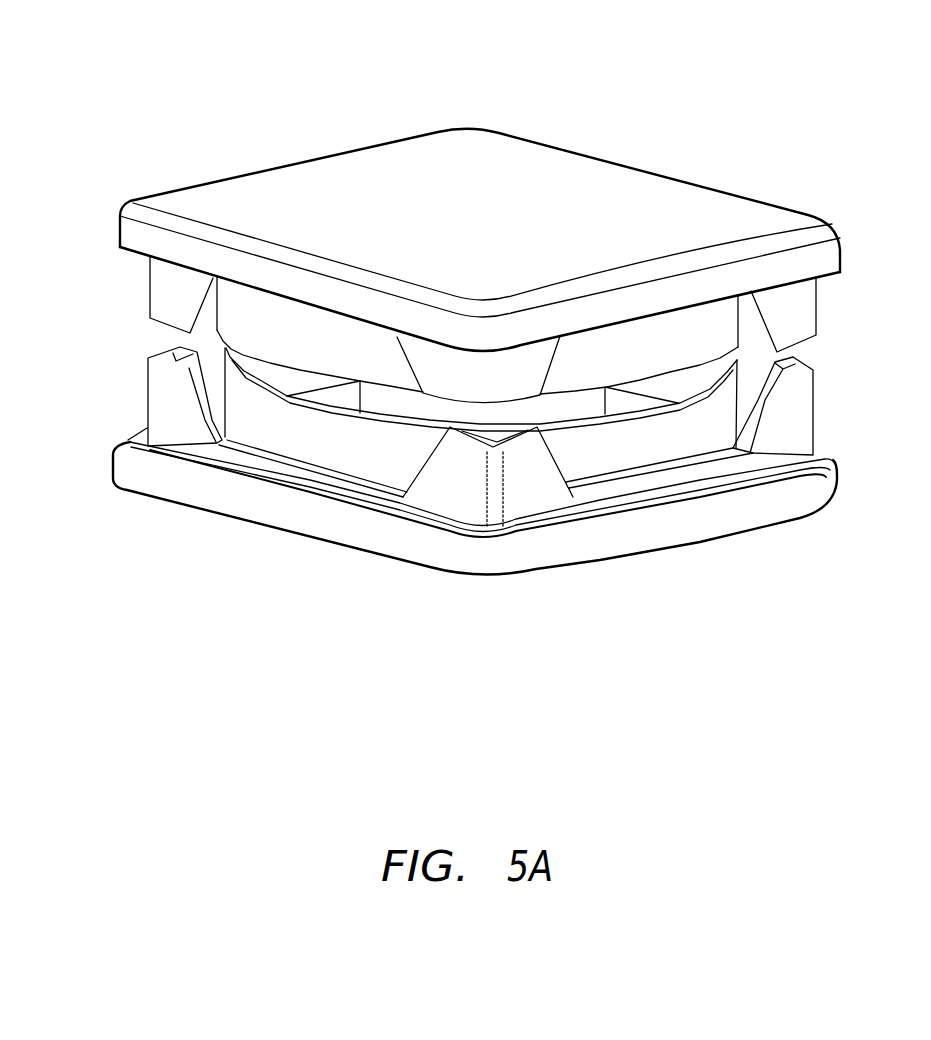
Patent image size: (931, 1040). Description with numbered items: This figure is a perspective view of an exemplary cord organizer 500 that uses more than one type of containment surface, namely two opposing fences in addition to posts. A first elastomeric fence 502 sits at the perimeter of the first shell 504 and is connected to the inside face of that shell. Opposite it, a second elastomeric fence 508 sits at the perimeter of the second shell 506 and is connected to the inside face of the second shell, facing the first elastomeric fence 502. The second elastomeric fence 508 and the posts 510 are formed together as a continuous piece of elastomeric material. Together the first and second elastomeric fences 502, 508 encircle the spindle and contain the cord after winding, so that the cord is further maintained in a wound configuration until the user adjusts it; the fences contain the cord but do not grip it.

The cord organizer 500 is at (757, 72).
The first elastomeric fence 502 is at (282, 330).
The first shell 504 is at (118, 222).
The second shell 506 is at (127, 490).
The second elastomeric fence 508 is at (372, 448).
The posts 510 is at (528, 485).